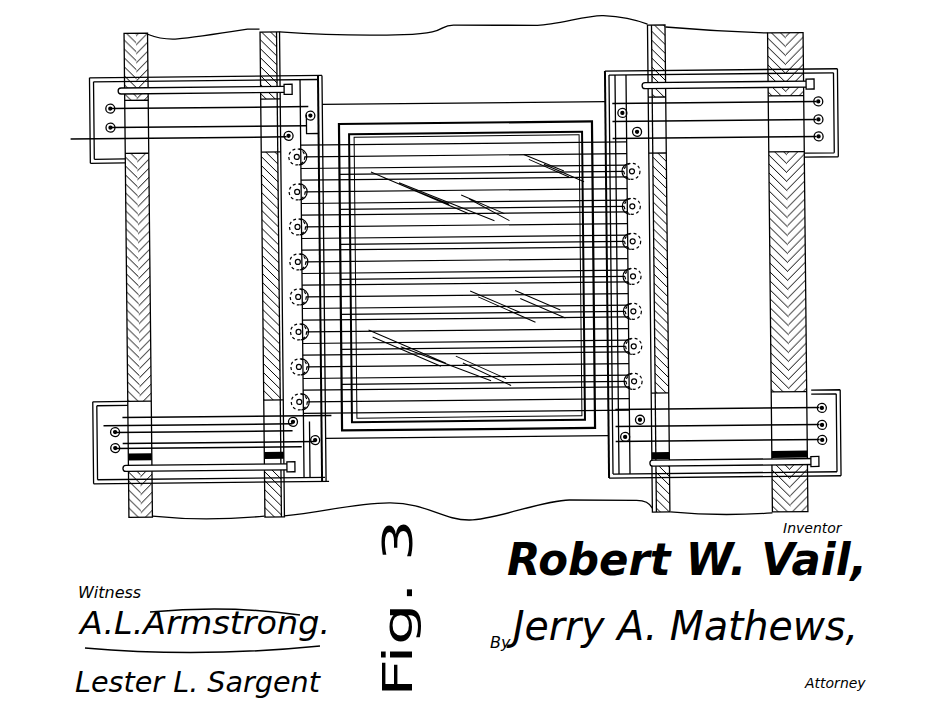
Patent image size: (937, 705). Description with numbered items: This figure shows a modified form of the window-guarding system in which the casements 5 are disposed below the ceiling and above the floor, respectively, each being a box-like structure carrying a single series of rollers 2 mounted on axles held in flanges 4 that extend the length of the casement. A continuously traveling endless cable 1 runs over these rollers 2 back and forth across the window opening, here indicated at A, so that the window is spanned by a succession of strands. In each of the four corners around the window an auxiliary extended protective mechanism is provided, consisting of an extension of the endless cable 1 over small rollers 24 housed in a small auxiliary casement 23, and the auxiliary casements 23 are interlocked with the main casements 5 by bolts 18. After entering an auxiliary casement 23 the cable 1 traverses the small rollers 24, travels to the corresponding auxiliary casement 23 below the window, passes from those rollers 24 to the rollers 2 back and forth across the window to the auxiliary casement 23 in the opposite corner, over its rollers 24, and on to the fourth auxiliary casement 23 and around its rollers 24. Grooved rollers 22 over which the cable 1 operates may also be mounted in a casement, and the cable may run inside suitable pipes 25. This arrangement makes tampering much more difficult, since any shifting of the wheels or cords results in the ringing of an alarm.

The cable 1 is at (120, 135).
The rollers 2 is at (298, 217).
The flanges 4 is at (320, 97).
The casements 5 is at (607, 85).
The bolts 18 is at (224, 84).
The grooved rollers 22 is at (212, 122).
The auxiliary casement 23 is at (103, 74).
The rollers 24 is at (108, 124).
The pipes 25 is at (110, 394).
The panel A is at (464, 122).